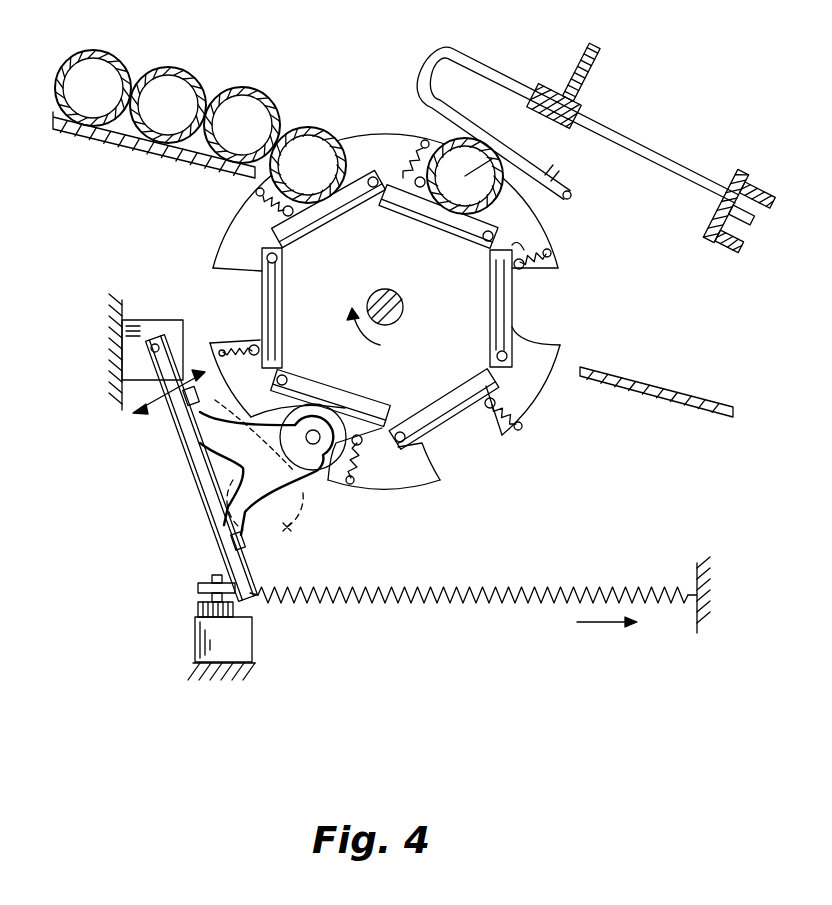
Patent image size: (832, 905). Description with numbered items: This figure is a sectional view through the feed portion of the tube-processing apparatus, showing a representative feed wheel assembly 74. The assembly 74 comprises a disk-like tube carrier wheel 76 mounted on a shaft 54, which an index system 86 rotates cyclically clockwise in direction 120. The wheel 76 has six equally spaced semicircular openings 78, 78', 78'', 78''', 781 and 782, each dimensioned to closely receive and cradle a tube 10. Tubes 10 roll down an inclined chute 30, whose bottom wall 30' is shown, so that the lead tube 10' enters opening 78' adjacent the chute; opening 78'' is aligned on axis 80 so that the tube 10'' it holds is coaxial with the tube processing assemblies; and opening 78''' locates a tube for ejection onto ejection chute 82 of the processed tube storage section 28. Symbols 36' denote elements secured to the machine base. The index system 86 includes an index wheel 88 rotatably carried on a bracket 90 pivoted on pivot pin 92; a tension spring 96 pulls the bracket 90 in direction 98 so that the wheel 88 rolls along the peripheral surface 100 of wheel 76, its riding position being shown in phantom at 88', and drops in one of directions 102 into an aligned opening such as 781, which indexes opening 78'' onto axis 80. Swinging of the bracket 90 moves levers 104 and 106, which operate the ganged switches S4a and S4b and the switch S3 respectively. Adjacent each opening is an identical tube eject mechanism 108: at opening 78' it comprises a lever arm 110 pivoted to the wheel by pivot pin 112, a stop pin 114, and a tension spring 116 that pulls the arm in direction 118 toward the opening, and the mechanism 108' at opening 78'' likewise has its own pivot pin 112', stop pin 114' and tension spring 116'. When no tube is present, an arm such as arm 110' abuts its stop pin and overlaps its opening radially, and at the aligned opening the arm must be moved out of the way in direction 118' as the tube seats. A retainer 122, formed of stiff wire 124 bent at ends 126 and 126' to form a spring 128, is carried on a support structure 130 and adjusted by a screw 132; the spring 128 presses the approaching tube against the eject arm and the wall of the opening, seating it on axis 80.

The tubes 10 is at (167, 96).
The lead tube 10' is at (308, 135).
The tube aligned on processing axis 10'' is at (469, 149).
The processed tube storage section 28 is at (710, 382).
The inclined chute 30 is at (154, 146).
The bottom wall 30' is at (157, 174).
The base securing symbols 36' is at (398, 509).
The shaft 54 is at (403, 318).
The feed wheel assembly 74 is at (608, 248).
The tube carrier wheel 76 is at (521, 418).
The semicircular opening 78 is at (265, 348).
The tube receiving opening 78' is at (364, 146).
The aligned opening 78'' is at (550, 151).
The ejection opening 78''' is at (587, 325).
The index opening 781 is at (320, 486).
The semicircular opening 782 is at (495, 450).
The processing axis 80 is at (545, 168).
The ejection chute 82 is at (668, 399).
The index system 86 is at (203, 545).
The index wheel 88 is at (266, 458).
The index wheel in phantom position 88' is at (268, 522).
The bracket 90 is at (209, 497).
The pivot pin 92 is at (155, 344).
The tension spring 96 is at (450, 606).
The spring pull direction 98 is at (607, 622).
The peripheral surface 100 is at (438, 485).
The bracket swing directions 102 is at (180, 425).
The switch lever 104 is at (200, 596).
The switch lever 106 is at (198, 584).
The tube eject mechanism 108 is at (376, 349).
The tube eject mechanism 108' is at (444, 353).
The lever arm 110 is at (256, 292).
The lever arm 110' is at (485, 297).
The pivot pin 112 is at (410, 138).
The spring 112' is at (510, 399).
The stop pin 114 is at (303, 174).
The roller 114' is at (539, 281).
The tension spring 116 is at (249, 191).
The spring 116' is at (554, 239).
The lever pull direction 118 is at (333, 210).
The lever displacement direction 118' is at (458, 217).
The rotation direction 120 is at (350, 339).
The retainer 122 is at (639, 126).
The stiff wire 124 is at (664, 163).
The bent wire end 126 is at (426, 28).
The bent wire end 126' is at (601, 202).
The spring 128 is at (563, 186).
The support structure 130 is at (726, 258).
The adjustable screw 132 is at (580, 46).
The switch S3 is at (240, 648).
The switch S4a is at (196, 660).
The switch S4b is at (200, 672).